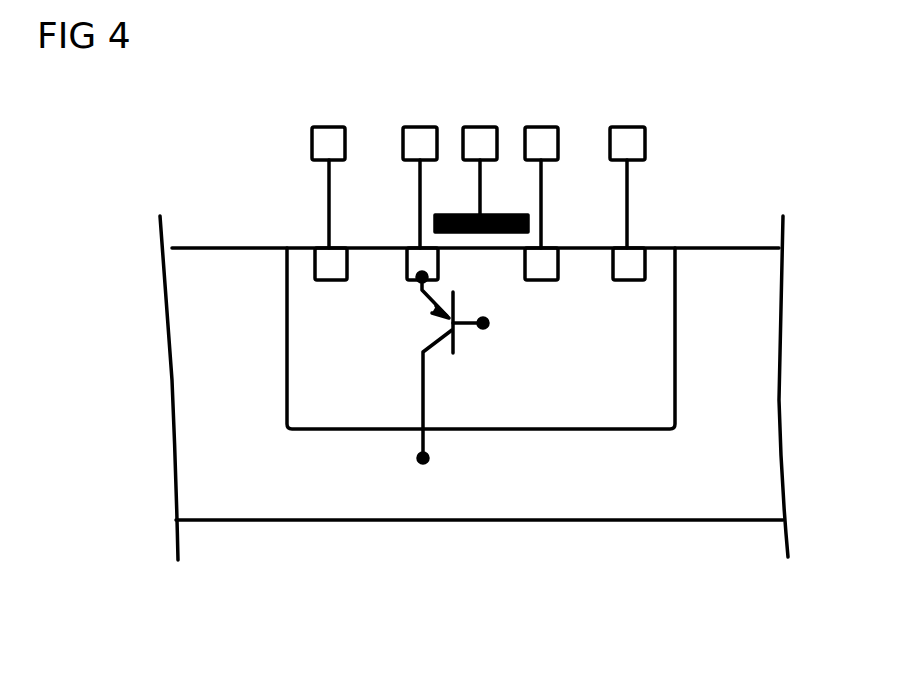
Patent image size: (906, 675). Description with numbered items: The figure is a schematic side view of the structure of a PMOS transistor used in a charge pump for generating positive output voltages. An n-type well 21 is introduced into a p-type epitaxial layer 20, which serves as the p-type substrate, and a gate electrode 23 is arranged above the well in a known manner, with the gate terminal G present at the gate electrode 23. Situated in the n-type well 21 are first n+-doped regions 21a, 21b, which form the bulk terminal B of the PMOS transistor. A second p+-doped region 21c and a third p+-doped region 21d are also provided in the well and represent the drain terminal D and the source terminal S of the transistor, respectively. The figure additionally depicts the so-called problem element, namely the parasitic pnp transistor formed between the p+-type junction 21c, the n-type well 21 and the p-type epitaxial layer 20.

The p-type epitaxial layer 20 is at (207, 503).
The n-type well 21 is at (313, 418).
The first n+-doped region 21a is at (317, 248).
The first n+-doped region 21b is at (638, 248).
The second p+-doped region 21c is at (412, 248).
The third p+-doped region 21d is at (552, 248).
The gate electrode 23 is at (512, 215).